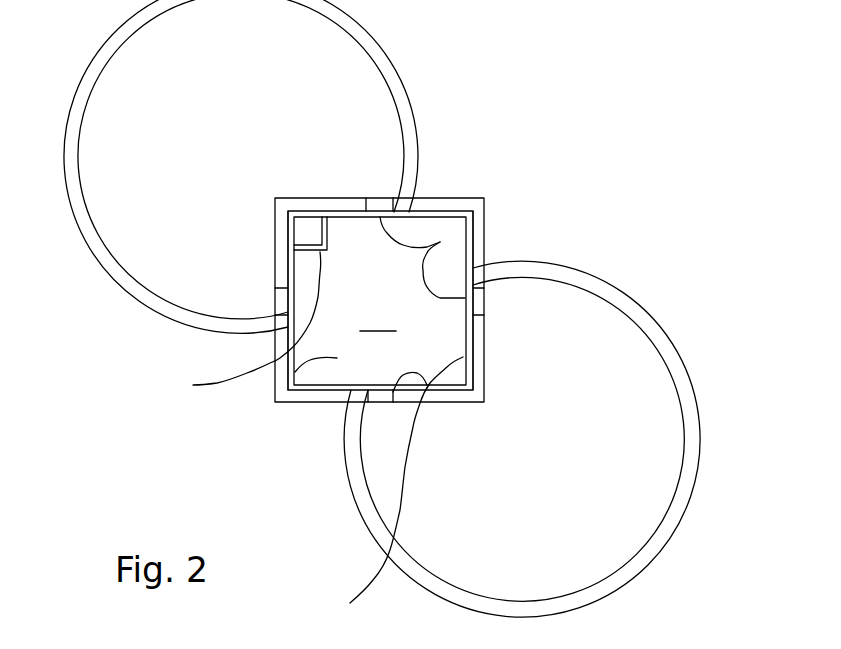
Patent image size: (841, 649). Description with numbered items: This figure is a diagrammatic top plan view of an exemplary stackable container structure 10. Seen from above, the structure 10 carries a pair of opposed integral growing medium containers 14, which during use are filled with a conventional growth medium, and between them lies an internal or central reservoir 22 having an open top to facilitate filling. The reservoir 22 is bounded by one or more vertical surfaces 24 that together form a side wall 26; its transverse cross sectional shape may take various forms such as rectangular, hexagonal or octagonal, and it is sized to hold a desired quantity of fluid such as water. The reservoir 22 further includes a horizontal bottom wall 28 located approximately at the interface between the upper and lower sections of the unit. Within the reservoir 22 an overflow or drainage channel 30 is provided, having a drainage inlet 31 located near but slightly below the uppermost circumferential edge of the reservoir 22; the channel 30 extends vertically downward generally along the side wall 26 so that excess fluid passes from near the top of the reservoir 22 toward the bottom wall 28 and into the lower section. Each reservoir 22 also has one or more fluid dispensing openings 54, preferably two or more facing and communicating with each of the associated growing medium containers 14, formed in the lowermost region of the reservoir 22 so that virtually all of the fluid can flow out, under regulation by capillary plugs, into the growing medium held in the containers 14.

The stackable container structure 10 is at (633, 157).
The growing medium container 14 is at (393, 60).
The reservoir 22 is at (301, 348).
The vertical surface 24 is at (442, 127).
The side wall 26 is at (322, 405).
The bottom wall 28 is at (278, 405).
The drainage channel 30 is at (229, 323).
The drainage inlet 31 is at (303, 233).
The fluid dispensing opening 54 is at (440, 242).